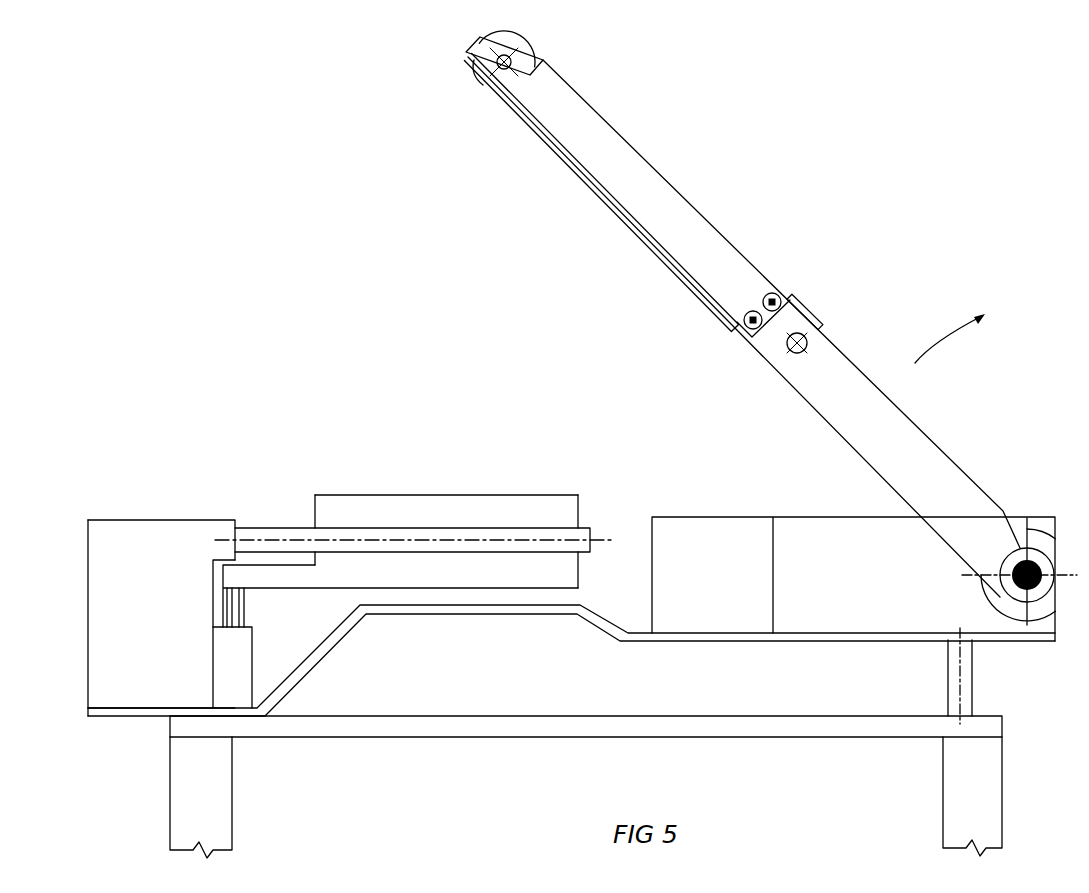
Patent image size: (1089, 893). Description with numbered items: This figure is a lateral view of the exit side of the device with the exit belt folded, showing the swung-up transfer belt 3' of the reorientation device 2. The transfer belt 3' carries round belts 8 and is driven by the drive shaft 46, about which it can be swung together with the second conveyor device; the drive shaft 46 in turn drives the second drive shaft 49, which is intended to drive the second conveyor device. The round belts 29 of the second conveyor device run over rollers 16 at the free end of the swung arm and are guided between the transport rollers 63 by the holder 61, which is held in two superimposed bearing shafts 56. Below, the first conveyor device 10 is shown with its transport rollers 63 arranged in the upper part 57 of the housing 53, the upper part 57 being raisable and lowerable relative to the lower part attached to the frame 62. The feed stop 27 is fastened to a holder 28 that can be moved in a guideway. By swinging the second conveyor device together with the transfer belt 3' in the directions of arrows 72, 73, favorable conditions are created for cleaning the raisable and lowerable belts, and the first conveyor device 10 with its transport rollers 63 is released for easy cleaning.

The reorientation device 2 is at (410, 478).
The transfer belt 3' is at (781, 304).
The round belt 8 is at (930, 437).
The first conveyor device 10 is at (283, 518).
The rollers 16 is at (478, 80).
The feed stop 27 is at (450, 516).
The holder 28 is at (243, 602).
The round belts 29 is at (703, 208).
The drive shaft 46 is at (1033, 556).
The second drive shaft 49 is at (820, 333).
The housing 53 is at (128, 510).
The bearing shafts 56 is at (773, 293).
The upper part 57 is at (112, 575).
The holder 61 is at (627, 170).
The frame 62 is at (338, 725).
The transport rollers 63 is at (360, 532).
The arrow 72 is at (940, 333).
The arrow 73 is at (808, 505).